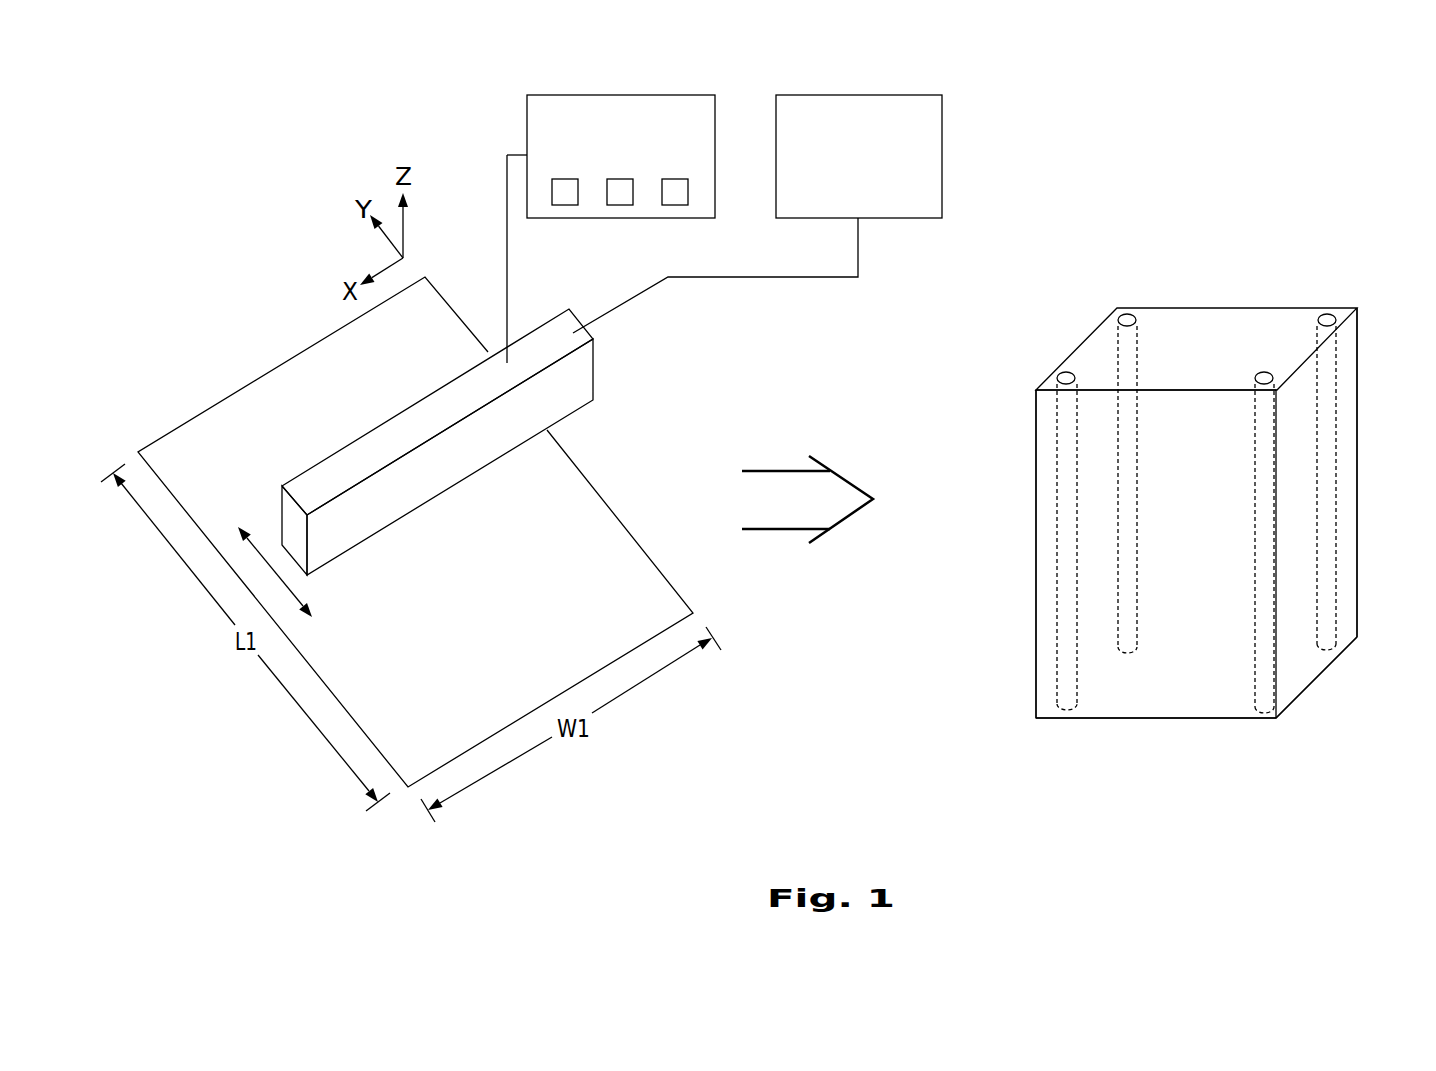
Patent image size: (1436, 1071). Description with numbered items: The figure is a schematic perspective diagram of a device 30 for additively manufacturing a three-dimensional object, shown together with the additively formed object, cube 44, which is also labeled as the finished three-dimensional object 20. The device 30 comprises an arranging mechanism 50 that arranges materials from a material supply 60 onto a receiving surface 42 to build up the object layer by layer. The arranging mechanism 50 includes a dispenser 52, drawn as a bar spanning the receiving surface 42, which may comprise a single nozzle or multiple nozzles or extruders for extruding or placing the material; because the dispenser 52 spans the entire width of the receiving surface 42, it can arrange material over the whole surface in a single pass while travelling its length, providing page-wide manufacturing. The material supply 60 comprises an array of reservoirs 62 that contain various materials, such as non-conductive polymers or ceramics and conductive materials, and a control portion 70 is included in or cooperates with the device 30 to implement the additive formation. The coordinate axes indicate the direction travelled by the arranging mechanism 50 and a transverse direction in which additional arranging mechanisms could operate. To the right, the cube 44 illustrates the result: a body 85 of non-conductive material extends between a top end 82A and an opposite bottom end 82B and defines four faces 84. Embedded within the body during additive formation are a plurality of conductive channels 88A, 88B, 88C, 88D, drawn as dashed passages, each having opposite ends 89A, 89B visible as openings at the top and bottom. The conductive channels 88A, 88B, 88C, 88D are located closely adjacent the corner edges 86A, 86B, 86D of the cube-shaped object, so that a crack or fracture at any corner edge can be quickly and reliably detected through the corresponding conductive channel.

The three-dimensional object 20 is at (1255, 126).
The device 30 is at (267, 171).
The receiving surface 42 is at (588, 623).
The cube 44 is at (1197, 496).
The arranging mechanism 50 is at (456, 146).
The dispenser 52 is at (374, 409).
The material supply 60 is at (613, 82).
The reservoirs 62 is at (565, 205).
The control portion 70 is at (852, 82).
The top end 82A is at (1288, 318).
The bottom end 82B is at (1168, 720).
The faces 84 is at (1120, 710).
The body 85 is at (1198, 535).
The corner edge 86A is at (1036, 532).
The corner edge 86B is at (1277, 675).
The corner edge 86D is at (1358, 465).
The conductive channel 88A is at (1062, 628).
The conductive channel 88B is at (1260, 663).
The conductive channel 88C is at (1132, 365).
The conductive channel 88D is at (1332, 565).
The end 89A is at (1070, 377).
The end 89B is at (1065, 718).